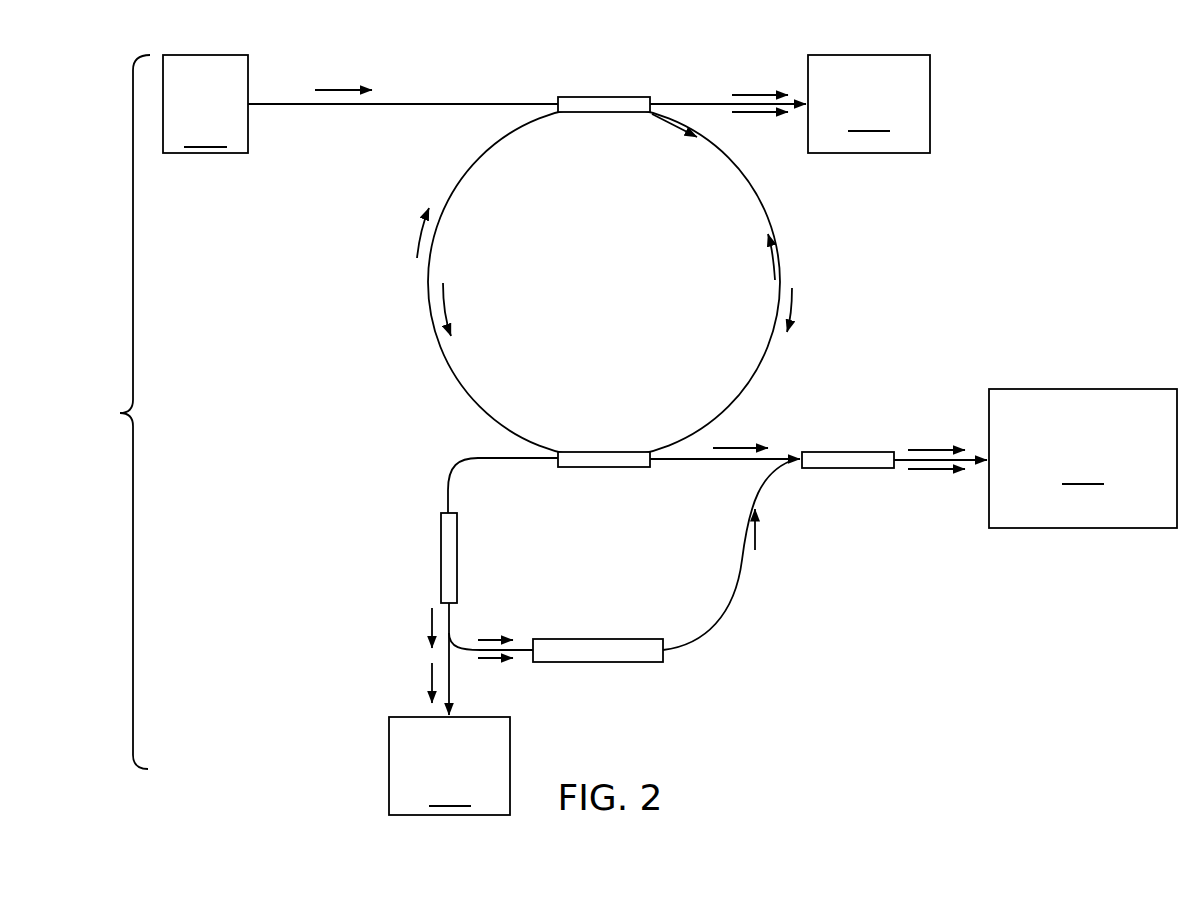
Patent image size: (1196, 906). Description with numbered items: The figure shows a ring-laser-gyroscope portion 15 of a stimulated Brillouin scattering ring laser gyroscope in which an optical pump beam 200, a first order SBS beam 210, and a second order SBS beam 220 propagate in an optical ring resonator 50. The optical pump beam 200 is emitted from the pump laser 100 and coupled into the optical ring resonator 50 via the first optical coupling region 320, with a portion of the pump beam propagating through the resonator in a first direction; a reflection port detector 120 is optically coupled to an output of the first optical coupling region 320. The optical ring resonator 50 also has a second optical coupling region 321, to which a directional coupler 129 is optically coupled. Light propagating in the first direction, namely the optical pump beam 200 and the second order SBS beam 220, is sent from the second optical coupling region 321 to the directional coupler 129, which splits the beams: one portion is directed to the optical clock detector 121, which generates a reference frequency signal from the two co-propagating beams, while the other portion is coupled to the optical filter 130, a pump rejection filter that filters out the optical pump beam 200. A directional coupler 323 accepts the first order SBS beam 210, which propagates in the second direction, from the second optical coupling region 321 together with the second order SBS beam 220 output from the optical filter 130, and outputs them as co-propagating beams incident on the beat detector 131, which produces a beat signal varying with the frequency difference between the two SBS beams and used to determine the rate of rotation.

The ring-laser-gyroscope portion 15 is at (116, 412).
The optical ring resonator 50 is at (490, 424).
The pump laser 100 is at (360, 104).
The reflection port detector 120 is at (869, 104).
The optical clock detector 121 is at (449, 766).
The directional coupler 129 is at (440, 558).
The optical filter 130 is at (597, 638).
The beat detector 131 is at (1083, 458).
The optical pump beam 200 is at (341, 88).
The first order SBS beam 210 is at (446, 305).
The second order SBS beam 220 is at (422, 240).
The first optical coupling region 320 is at (604, 96).
The second optical coupling region 321 is at (603, 468).
The directional coupler 323 is at (847, 451).